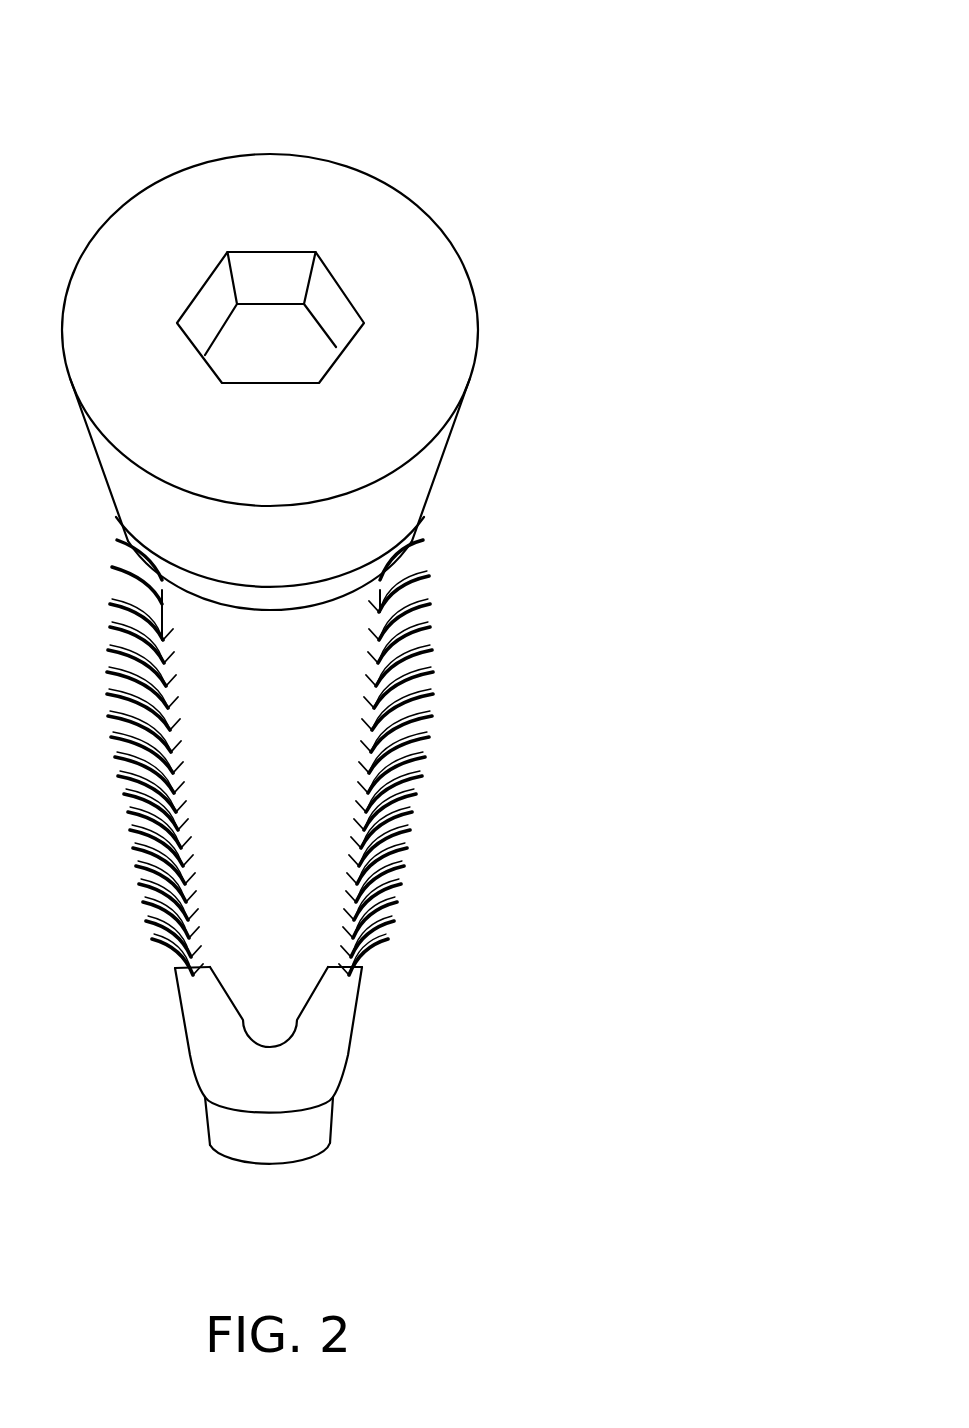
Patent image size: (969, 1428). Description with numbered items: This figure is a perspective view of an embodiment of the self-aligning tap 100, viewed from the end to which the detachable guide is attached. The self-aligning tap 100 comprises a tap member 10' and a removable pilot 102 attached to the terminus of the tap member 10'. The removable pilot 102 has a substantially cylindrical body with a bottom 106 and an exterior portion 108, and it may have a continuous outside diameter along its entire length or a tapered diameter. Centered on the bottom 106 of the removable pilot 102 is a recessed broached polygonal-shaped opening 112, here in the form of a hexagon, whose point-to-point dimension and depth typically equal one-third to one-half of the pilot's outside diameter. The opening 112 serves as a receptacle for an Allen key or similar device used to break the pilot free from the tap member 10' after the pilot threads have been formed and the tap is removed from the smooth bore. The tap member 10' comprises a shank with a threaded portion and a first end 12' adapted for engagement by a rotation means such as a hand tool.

The self-aligning tap 100 is at (374, 586).
The removable pilot 102 is at (371, 315).
The bottom 106 is at (250, 172).
The exterior portion 108 is at (429, 478).
The recessed broached polygonal-shaped opening 112 is at (298, 303).
The tap member 10' is at (397, 757).
The first end 12' is at (342, 1065).